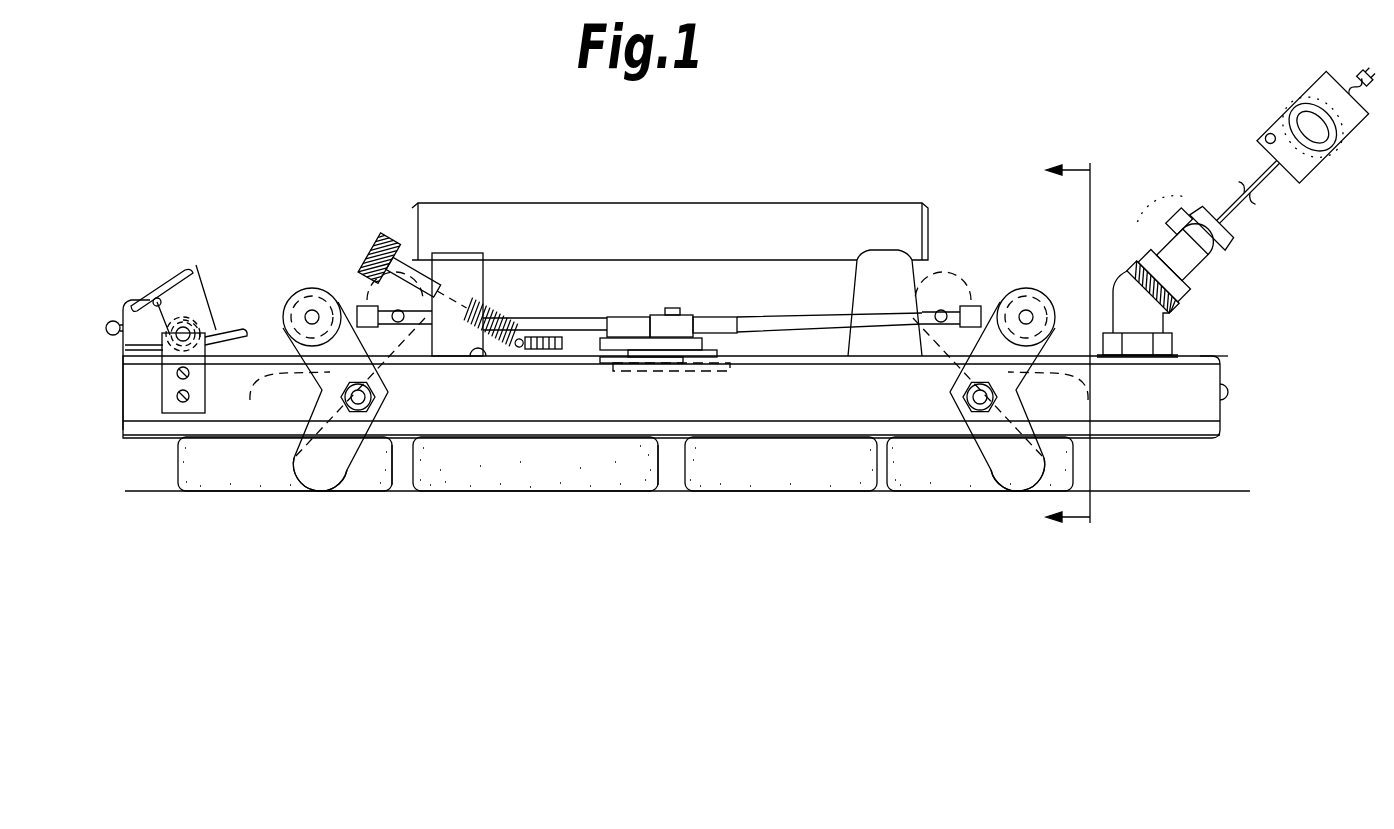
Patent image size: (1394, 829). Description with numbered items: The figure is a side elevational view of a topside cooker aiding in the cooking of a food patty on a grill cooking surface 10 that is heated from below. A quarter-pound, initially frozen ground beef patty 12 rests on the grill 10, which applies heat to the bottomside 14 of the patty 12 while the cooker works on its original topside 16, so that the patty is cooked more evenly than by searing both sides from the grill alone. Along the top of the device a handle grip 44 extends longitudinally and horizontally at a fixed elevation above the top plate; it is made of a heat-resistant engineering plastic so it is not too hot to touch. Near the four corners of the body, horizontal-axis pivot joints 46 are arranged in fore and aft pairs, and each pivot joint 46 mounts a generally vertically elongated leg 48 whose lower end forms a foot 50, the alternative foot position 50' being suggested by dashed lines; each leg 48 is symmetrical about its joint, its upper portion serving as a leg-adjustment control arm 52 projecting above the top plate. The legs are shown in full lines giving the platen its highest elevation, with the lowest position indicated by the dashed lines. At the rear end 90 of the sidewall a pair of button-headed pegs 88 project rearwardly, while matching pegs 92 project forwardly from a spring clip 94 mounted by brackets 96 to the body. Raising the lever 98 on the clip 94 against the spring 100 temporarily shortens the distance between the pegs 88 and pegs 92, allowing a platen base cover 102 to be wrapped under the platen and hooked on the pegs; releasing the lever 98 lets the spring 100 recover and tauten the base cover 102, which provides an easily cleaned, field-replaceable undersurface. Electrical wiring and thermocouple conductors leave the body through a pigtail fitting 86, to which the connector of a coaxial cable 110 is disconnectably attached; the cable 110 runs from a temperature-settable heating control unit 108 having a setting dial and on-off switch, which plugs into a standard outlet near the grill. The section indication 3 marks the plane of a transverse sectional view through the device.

The section line 3- 3 is at (1056, 344).
The grill cooking surface 10 is at (1162, 490).
The patty 12 is at (512, 478).
The bottomside 14 is at (548, 495).
The topside 16 is at (596, 437).
The handle grip 44 is at (765, 203).
The pivot joint 46 is at (375, 406).
The leg 48 is at (298, 462).
The foot 50 is at (1014, 494).
The cam roller end 50' is at (338, 496).
The leg-adjustment control arm 52 is at (283, 345).
The pigtail fitting 86 is at (1165, 328).
The button-headed pegs 88 is at (1230, 393).
The rear end 90 is at (1222, 372).
The pegs 92 is at (103, 326).
The spring clip 94 is at (125, 345).
The brackets 96 is at (200, 396).
The lever 98 is at (162, 288).
The spring 100 is at (196, 290).
The platen base cover 102 is at (122, 380).
The heating control unit 108 is at (1325, 82).
The coaxial cable 110 is at (1265, 168).